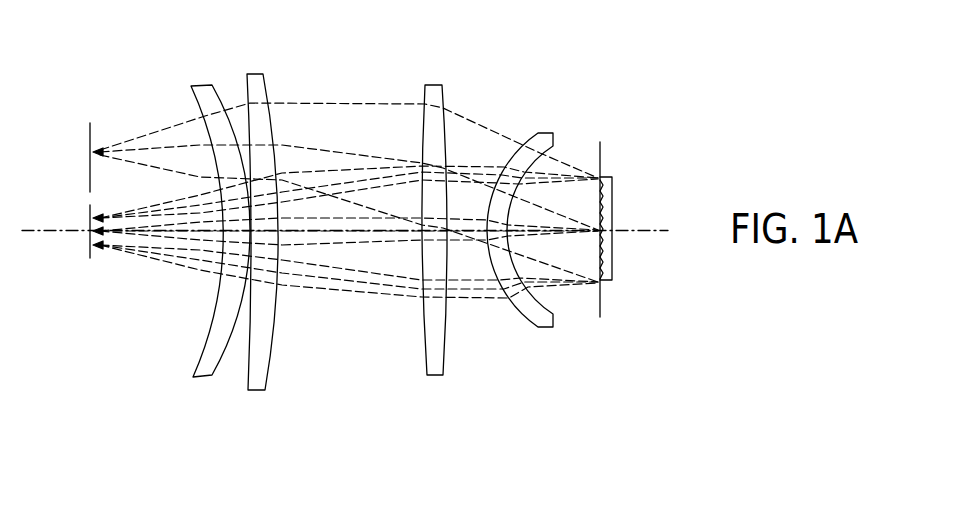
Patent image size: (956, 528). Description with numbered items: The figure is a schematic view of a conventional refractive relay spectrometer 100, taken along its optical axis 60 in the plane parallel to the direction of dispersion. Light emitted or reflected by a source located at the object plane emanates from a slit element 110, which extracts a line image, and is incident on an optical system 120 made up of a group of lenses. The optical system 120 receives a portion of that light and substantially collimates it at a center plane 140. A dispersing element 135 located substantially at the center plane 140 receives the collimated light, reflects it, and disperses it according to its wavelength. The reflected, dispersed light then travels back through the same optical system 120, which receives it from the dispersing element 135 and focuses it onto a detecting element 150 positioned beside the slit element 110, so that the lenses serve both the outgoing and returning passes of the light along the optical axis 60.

The refractive relay spectrometer 100 is at (136, 51).
The optical axis 60 is at (52, 230).
The slit element 110 is at (90, 122).
The detecting element 150 is at (90, 258).
The optical system 120 is at (553, 345).
The center plane 140 is at (600, 143).
The dispersing element 135 is at (613, 277).